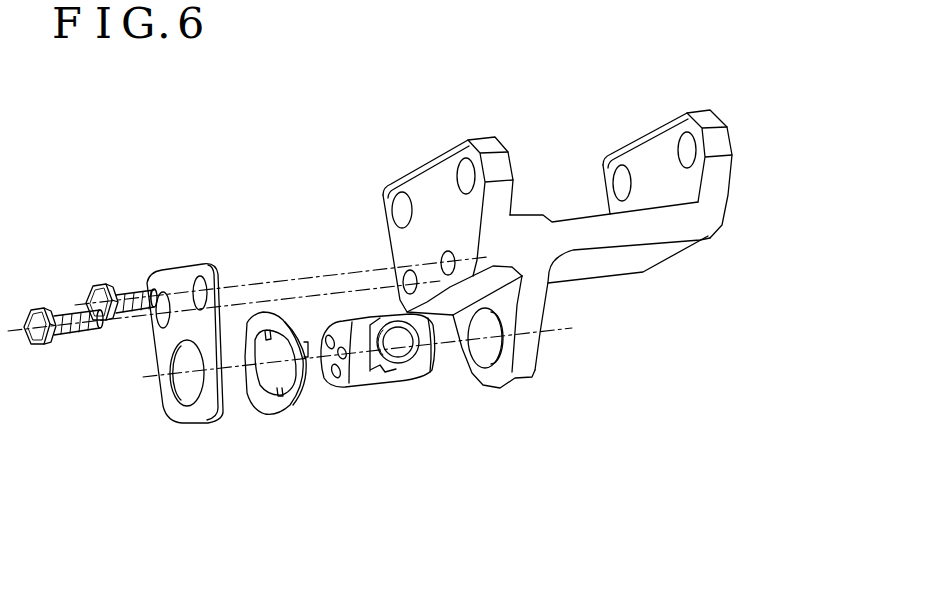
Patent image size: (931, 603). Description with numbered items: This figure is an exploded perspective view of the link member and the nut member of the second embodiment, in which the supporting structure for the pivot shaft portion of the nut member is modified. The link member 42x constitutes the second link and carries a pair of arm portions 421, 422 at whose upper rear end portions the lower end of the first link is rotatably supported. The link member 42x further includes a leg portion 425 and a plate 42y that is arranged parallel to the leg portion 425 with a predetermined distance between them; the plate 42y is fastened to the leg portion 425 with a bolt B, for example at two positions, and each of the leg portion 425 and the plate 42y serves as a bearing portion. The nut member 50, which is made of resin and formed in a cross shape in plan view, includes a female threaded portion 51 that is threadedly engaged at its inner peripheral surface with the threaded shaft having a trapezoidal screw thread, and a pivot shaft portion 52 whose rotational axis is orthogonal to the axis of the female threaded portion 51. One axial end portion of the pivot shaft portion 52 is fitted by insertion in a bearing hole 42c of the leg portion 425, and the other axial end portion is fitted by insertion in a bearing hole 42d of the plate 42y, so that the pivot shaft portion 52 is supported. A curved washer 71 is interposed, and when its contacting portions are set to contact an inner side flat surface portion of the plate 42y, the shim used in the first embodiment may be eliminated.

The bolt B is at (36, 311).
The plate 42y is at (186, 416).
The bearing hole 42d is at (172, 397).
The curved washer 71 is at (266, 400).
The nut member 50 is at (386, 392).
The pivot shaft portion 52 is at (355, 326).
The female threaded portion 51 is at (409, 340).
The arm portion 421 is at (422, 185).
The bearing hole 42c is at (488, 356).
The leg portion 425 is at (545, 307).
The arm portion 422 is at (722, 180).
The link member 42x is at (651, 123).